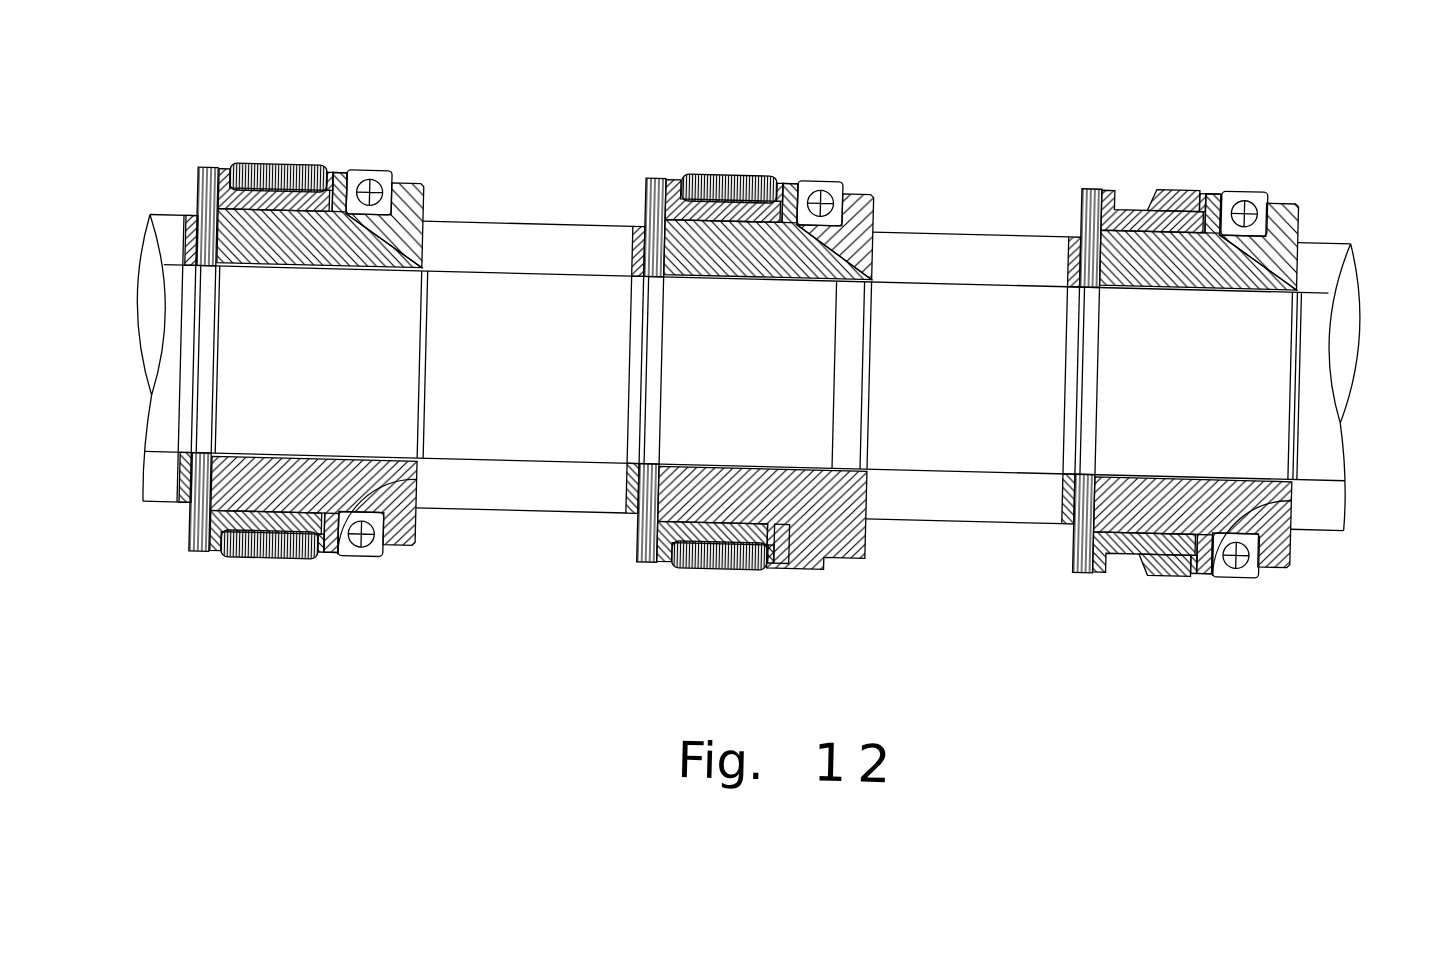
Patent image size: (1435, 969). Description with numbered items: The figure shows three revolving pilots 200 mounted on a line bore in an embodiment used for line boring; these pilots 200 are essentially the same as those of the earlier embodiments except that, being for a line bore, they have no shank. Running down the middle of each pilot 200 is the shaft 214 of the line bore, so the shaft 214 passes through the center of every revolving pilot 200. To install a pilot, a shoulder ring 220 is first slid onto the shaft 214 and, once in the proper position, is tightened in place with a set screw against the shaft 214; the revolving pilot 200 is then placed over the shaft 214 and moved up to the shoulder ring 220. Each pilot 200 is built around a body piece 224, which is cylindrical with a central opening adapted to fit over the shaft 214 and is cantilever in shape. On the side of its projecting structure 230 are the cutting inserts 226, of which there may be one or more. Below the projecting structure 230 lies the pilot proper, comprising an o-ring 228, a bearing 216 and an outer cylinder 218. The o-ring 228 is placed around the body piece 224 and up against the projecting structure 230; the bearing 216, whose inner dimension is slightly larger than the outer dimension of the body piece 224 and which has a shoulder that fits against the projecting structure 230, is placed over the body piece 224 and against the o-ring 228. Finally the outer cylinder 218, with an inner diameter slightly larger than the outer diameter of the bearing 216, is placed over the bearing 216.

The revolving pilot 200 is at (351, 247).
The shaft 214 is at (963, 320).
The bearing 216 is at (254, 185).
The outer cylinder 218 is at (282, 167).
The shoulder ring 220 is at (190, 489).
The body piece 224 is at (228, 220).
The cutting insert 226 is at (389, 171).
The o-ring 228 is at (324, 169).
The projecting structure 230 is at (342, 170).